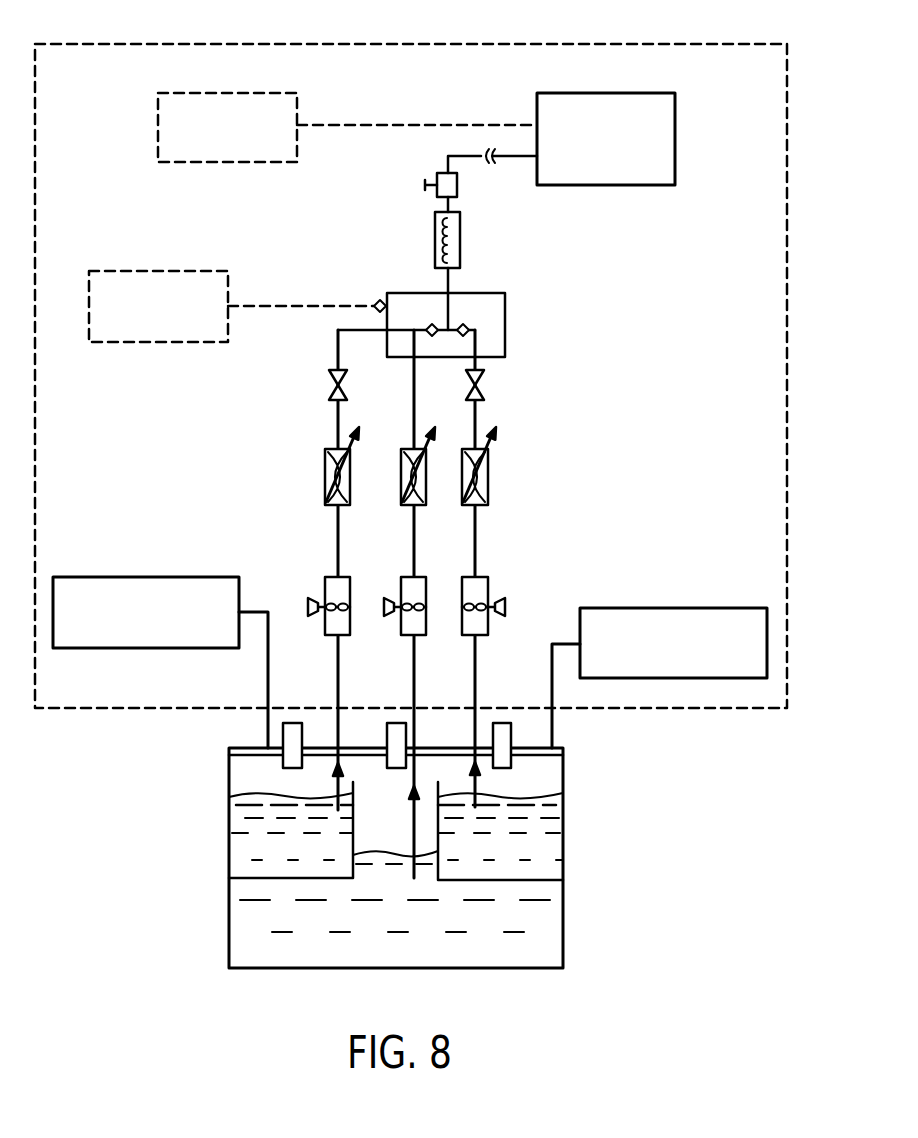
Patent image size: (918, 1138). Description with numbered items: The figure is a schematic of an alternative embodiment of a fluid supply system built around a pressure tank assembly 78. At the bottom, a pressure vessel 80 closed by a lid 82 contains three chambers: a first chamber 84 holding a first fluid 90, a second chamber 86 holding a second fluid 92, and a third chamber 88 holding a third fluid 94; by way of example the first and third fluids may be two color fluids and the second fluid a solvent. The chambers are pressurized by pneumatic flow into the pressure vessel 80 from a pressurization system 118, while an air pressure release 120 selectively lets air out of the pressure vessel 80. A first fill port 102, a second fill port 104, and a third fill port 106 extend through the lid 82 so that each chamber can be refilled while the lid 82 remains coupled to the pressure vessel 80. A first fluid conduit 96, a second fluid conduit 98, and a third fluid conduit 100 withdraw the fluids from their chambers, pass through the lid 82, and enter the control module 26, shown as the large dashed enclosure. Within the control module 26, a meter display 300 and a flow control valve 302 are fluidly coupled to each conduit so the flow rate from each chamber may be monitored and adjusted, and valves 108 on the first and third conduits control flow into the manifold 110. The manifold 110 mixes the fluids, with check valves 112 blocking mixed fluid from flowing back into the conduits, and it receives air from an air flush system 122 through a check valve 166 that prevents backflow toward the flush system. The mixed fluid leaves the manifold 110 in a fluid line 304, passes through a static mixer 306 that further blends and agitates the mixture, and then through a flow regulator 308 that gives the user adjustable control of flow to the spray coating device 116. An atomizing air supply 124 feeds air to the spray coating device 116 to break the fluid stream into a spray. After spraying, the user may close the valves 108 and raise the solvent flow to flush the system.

The control module 26 is at (412, 44).
The atomizing air supply 124 is at (228, 93).
The spray coating device 116 is at (604, 93).
The air flush system 122 is at (158, 271).
The check valve 166 is at (378, 303).
The flow regulator 308 is at (457, 185).
The static mixer 306 is at (460, 243).
The fluid line 304 is at (447, 283).
The manifold 110 is at (505, 322).
The valves 112 is at (432, 336).
The valves 108 is at (528, 393).
The flow control valves 302 is at (530, 492).
The meter displays 300 is at (528, 582).
The pressurization system 118 is at (145, 577).
The air pressure release 120 is at (672, 608).
The third fluid conduit 100 is at (337, 655).
The second fluid conduit 98 is at (414, 695).
The first fluid conduit 96 is at (475, 695).
The third fill port 106 is at (292, 723).
The second fill port 104 is at (406, 735).
The first fill port 102 is at (511, 735).
The lid 82 is at (229, 750).
The third chamber 88 is at (245, 778).
The third fluid 94 is at (245, 826).
The first chamber 84 is at (548, 778).
The first fluid 90 is at (548, 822).
The second chamber 86 is at (427, 790).
The second fluid 92 is at (312, 958).
The pressure vessel 80 is at (563, 968).
The pressure tank assembly 78 is at (176, 974).